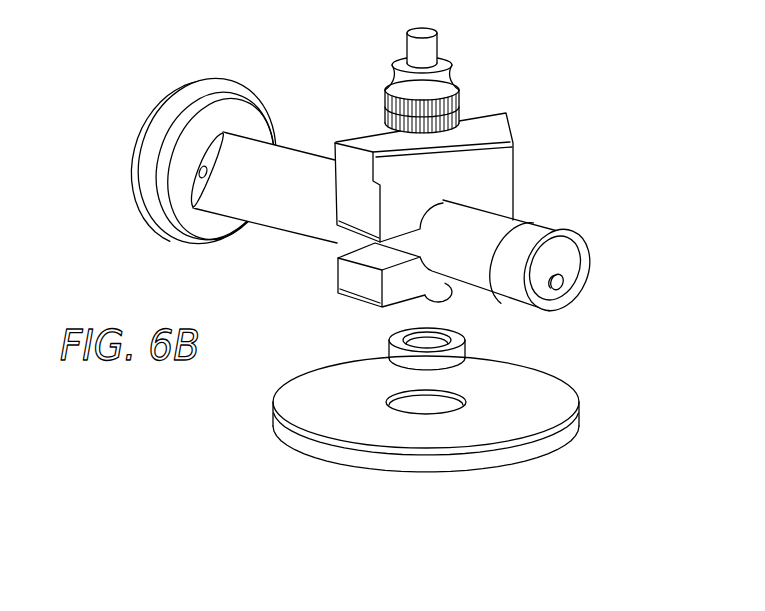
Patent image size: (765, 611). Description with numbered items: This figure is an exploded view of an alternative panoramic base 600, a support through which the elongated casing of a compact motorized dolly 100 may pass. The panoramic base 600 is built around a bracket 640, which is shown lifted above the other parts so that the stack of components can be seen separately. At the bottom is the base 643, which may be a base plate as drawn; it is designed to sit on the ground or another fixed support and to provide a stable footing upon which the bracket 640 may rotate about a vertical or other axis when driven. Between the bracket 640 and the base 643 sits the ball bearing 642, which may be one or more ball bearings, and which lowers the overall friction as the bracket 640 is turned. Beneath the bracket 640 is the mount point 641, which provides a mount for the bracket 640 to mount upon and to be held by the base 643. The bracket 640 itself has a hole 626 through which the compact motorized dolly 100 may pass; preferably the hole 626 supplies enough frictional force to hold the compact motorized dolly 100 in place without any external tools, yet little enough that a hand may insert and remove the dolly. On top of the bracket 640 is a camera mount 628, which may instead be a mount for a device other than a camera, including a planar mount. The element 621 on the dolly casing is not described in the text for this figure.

The compact motorized dolly 100 is at (580, 185).
The panoramic base 600 is at (300, 483).
The flange 621 is at (246, 68).
The hole 626 is at (443, 199).
The camera mount 628 is at (432, 82).
The bracket 640 is at (510, 117).
The mount point 641 is at (420, 301).
The ball bearings 642 is at (460, 350).
The base 643 is at (562, 432).